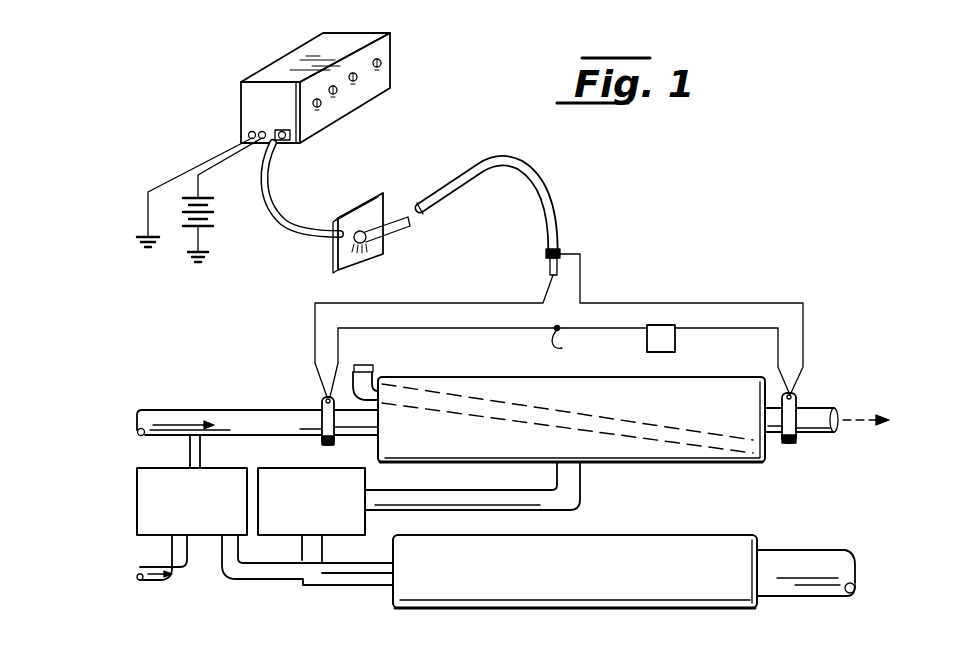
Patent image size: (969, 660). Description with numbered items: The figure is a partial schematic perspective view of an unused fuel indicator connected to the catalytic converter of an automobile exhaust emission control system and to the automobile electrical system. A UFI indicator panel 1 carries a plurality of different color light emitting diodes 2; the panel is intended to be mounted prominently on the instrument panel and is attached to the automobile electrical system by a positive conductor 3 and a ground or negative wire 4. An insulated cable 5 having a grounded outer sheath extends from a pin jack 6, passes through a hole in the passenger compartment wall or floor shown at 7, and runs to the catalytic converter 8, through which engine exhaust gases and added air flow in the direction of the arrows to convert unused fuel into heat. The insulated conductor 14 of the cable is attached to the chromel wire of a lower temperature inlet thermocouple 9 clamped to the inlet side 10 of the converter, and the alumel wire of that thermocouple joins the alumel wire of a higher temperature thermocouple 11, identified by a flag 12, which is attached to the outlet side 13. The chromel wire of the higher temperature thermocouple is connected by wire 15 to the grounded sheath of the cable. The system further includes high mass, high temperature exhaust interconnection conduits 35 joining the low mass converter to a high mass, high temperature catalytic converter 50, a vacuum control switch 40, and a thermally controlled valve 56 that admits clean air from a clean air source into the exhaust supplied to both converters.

The UFI indicator panel 1 is at (290, 42).
The light emitting diodes 2 is at (321, 105).
The positive conductor 3 is at (216, 170).
The ground wire 4 is at (150, 190).
The insulated cable 5 is at (423, 214).
The pin jack 6 is at (296, 144).
The hole in passenger compartment wall 7 is at (366, 206).
The catalytic converter 8 is at (435, 378).
The inlet thermocouple 9 is at (325, 396).
The inlet side 10 is at (277, 418).
The higher temperature thermocouple 11 is at (796, 395).
The flag 12 is at (675, 340).
The outlet side 13 is at (808, 432).
The insulated conductor 14 is at (541, 300).
The wire 15 is at (600, 303).
The exhaust interconnection conduits 35 is at (572, 487).
The vacuum control switch 40 is at (316, 468).
The high mass catalytic converter 50 is at (708, 548).
The thermally controlled valve 56 is at (178, 466).